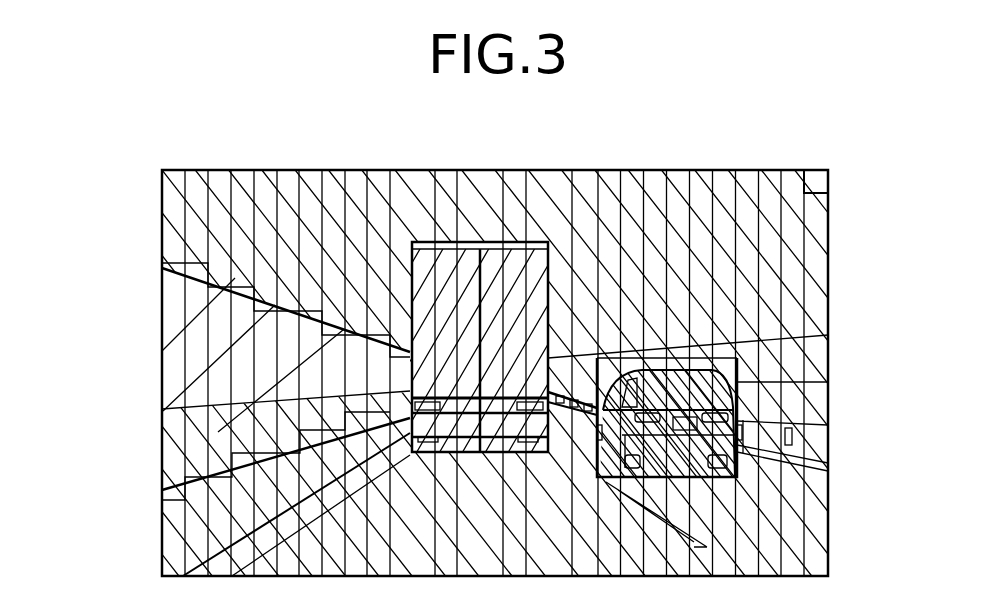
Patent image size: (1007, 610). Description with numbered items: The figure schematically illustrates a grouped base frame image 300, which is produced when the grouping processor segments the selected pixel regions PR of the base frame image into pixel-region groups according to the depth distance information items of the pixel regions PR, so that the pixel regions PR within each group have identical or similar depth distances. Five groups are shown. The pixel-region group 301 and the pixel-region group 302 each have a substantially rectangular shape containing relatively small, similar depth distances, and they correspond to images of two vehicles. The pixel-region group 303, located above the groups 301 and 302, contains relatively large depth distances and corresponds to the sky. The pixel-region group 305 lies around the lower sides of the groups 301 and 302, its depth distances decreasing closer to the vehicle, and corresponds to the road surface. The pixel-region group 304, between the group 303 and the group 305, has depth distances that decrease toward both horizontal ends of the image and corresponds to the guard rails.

The grouped base frame image 300 is at (793, 170).
The pixel-region group 301 is at (460, 242).
The pixel-region group 302 is at (740, 383).
The pixel-region group 303 is at (177, 232).
The pixel-region group 304 is at (177, 453).
The pixel-region group 305 is at (177, 547).
The pixel region PR is at (812, 183).